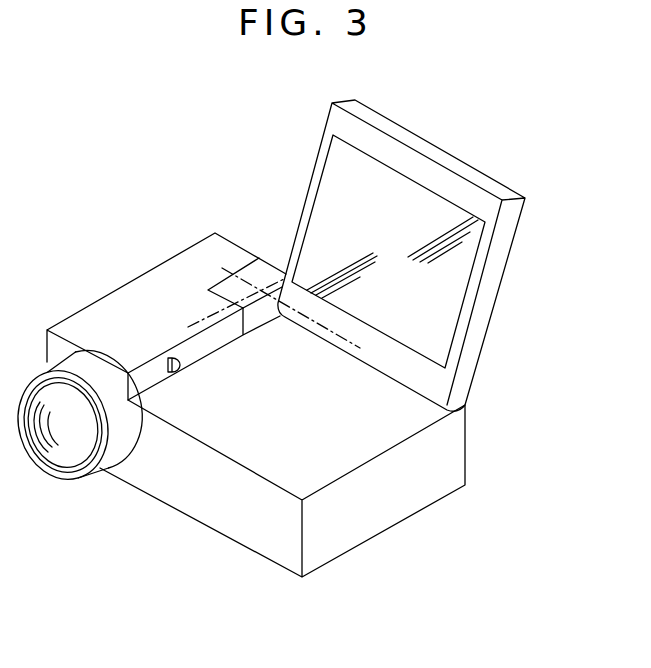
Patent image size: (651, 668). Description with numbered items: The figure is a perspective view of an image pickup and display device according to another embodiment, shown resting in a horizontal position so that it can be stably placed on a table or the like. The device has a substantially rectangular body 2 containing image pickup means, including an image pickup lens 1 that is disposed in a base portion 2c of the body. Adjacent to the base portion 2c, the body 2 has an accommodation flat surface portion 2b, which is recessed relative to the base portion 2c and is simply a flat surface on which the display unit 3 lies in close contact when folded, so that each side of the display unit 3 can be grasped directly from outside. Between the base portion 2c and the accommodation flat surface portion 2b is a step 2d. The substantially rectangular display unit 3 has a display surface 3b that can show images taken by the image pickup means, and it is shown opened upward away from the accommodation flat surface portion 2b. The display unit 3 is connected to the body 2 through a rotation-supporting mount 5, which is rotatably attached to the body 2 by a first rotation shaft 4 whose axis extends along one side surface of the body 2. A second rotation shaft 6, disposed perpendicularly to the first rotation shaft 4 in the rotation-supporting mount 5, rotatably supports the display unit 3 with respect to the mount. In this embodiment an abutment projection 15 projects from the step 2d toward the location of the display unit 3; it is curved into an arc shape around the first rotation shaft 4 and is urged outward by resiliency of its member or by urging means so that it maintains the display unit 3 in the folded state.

The image pickup lens 1 is at (78, 437).
The body 2 is at (254, 433).
The accommodation flat surface portion 2b is at (333, 460).
The base portion 2c is at (107, 320).
The step 2d is at (213, 340).
The display unit 3 is at (417, 255).
The display surface 3b is at (335, 205).
The first rotation shaft 4 is at (196, 320).
The rotation-supporting mount 5 is at (262, 318).
The second rotation shaft 6 is at (343, 352).
The abutment projection 15 is at (178, 373).